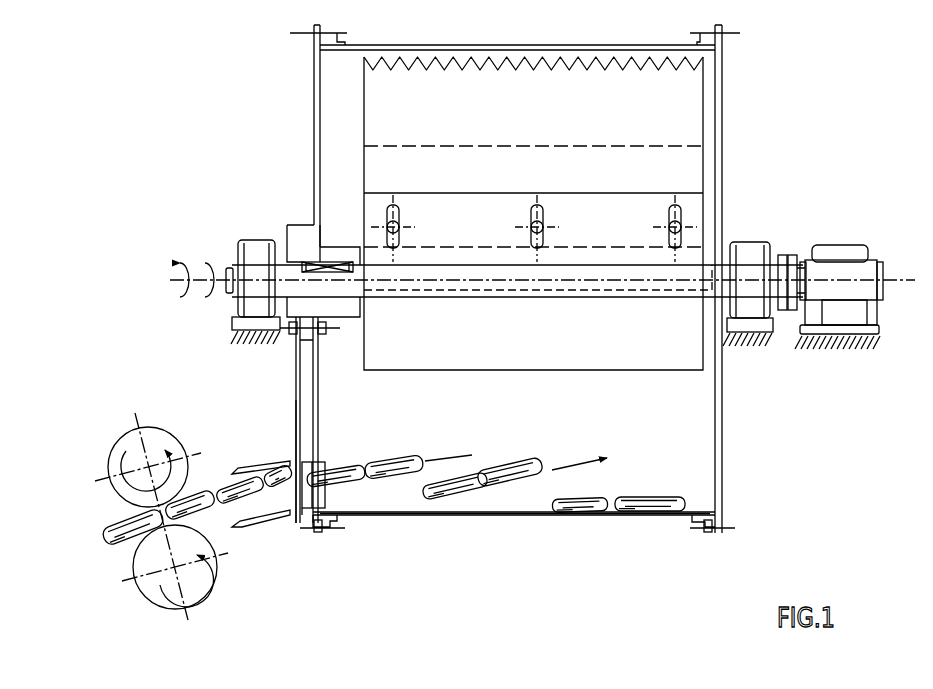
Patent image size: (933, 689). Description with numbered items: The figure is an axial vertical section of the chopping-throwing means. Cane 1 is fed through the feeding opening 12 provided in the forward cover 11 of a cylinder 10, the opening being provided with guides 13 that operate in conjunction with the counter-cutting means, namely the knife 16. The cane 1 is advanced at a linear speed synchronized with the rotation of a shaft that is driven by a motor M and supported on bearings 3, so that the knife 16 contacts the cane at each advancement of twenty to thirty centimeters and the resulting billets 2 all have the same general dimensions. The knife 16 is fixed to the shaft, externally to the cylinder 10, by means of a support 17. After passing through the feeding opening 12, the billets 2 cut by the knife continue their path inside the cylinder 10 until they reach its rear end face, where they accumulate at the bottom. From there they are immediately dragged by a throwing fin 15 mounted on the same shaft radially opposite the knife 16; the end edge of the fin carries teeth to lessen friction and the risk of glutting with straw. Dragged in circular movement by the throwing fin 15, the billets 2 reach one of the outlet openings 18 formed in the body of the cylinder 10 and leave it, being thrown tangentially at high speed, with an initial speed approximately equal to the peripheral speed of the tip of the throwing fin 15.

The cane 1 is at (103, 541).
The billets 2 is at (387, 473).
The bearings 3 is at (255, 265).
The cylinder 10 is at (622, 518).
The forward cover 11 is at (315, 383).
The feeding opening 12 is at (320, 492).
The guides 13 is at (305, 468).
The throwing fin 15 is at (503, 88).
The knife 16 is at (297, 418).
The support 17 is at (300, 238).
The outlet openings 18 is at (337, 178).
The motor M is at (852, 310).